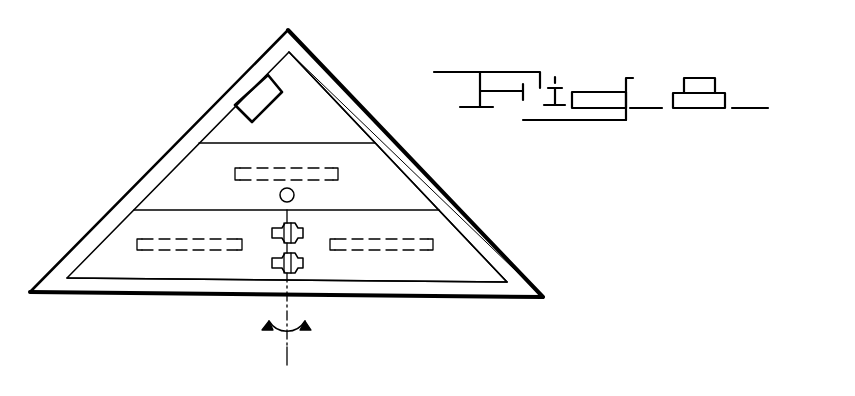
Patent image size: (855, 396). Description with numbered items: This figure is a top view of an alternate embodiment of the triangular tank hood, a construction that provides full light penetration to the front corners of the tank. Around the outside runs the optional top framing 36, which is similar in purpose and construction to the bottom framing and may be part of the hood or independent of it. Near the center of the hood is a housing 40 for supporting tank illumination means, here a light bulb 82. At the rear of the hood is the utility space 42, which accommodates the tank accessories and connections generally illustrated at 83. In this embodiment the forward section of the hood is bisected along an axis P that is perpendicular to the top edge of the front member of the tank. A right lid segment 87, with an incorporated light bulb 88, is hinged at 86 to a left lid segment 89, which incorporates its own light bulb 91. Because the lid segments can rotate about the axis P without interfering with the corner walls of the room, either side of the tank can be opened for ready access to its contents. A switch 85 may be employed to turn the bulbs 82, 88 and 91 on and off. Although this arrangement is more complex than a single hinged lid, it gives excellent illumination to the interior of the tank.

The top framing 36 is at (168, 165).
The housing 40 is at (408, 188).
The utility space 42 is at (340, 118).
The light bulb 82 is at (235, 178).
The tank accessories and connections 83 is at (256, 98).
The switch 85 is at (280, 196).
The hinge 86 is at (275, 270).
The right lid segment 87 is at (480, 272).
The light bulb 88 is at (433, 245).
The left lid segment 89 is at (118, 268).
The light bulb 91 is at (137, 243).
The axis P is at (286, 330).